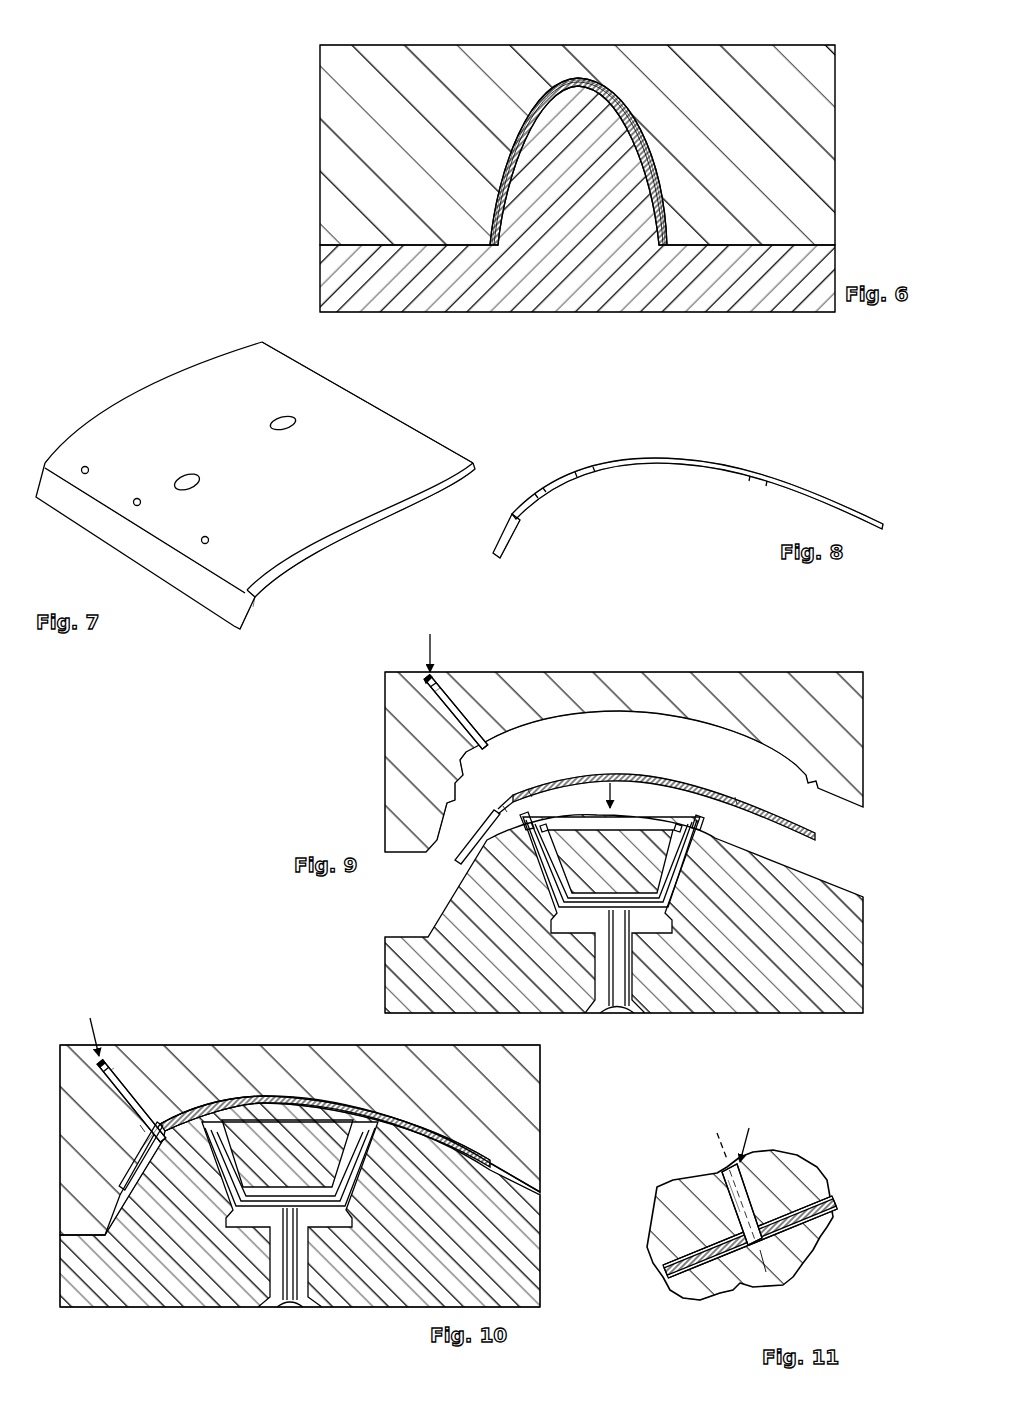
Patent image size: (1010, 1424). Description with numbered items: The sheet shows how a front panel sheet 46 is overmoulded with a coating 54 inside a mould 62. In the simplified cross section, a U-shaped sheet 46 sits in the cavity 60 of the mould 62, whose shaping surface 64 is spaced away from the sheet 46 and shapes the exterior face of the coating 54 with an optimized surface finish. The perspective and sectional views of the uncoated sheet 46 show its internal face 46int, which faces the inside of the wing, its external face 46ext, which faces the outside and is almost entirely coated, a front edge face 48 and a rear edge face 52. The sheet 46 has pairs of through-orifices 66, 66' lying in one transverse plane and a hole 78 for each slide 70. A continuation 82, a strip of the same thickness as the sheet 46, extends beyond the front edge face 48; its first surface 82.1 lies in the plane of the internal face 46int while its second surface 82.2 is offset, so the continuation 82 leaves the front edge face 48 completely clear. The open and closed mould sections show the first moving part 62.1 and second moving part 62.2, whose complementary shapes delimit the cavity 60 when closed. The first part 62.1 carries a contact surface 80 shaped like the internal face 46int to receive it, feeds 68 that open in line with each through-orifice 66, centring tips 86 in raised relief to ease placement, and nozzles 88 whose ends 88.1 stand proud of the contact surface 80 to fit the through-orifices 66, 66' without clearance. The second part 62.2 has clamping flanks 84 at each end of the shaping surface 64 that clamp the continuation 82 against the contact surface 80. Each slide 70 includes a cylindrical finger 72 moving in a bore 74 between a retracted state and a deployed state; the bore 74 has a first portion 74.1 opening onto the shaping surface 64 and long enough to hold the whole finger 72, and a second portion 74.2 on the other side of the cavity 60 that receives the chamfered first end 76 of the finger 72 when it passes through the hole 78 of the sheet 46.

In FIG. 6, the sheet 46 is at (647, 225).
In FIG. 7, the sheet 46 is at (117, 412).
In FIG. 8, the sheet 46 is at (733, 452).
In FIG. 9, the sheet 46 is at (627, 772).
In FIG. 10, the sheet 46 is at (305, 1098).
In FIG. 11, the sheet 46 is at (839, 1206).
In FIG. 7, the external face 46ext is at (355, 417).
In FIG. 8, the external face 46ext is at (668, 460).
In FIG. 9, the external face 46ext is at (800, 814).
In FIG. 10, the external face 46ext is at (453, 1128).
In FIG. 7, the internal face 46int is at (362, 510).
In FIG. 8, the internal face 46int is at (675, 476).
In FIG. 9, the internal face 46int is at (810, 843).
In FIG. 10, the internal face 46int is at (497, 1172).
In FIG. 7, the front edge face 48 is at (227, 590).
In FIG. 8, the front edge face 48 is at (508, 518).
In FIG. 7, the rear edge face 52 is at (440, 442).
In FIG. 8, the rear edge face 52 is at (883, 530).
In FIG. 11, the coating 54 is at (836, 1192).
In FIG. 6, the cavity 60 is at (630, 117).
In FIG. 10, the cavity 60 is at (360, 1100).
In FIG. 6, the mould 62 is at (840, 84).
In FIG. 9, the mould 62 is at (838, 686).
In FIG. 10, the mould 62 is at (232, 1044).
In FIG. 9, the first moving part 62.1 is at (782, 1010).
In FIG. 10, the first moving part 62.1 is at (205, 1290).
In FIG. 11, the first moving part 62.1 is at (810, 1237).
In FIG. 9, the second moving part 62.2 is at (647, 690).
In FIG. 10, the second moving part 62.2 is at (170, 1062).
In FIG. 11, the second moving part 62.2 is at (667, 1213).
In FIG. 6, the shaping surface 64 is at (578, 96).
In FIG. 9, the shaping surface 64 is at (543, 715).
In FIG. 10, the shaping surface 64 is at (263, 1095).
In FIG. 7, the through-orifice 66 is at (180, 414).
In FIG. 8, the through-orifice 66 is at (589, 442).
In FIG. 9, the through-orifice 66 is at (539, 765).
In FIG. 7, the through-orifice 66' is at (297, 381).
In FIG. 8, the through-orifice 66' is at (782, 461).
In FIG. 9, the through-orifice 66' is at (718, 773).
In FIG. 9, the feed 68 is at (657, 890).
In FIG. 10, the feed 68 is at (320, 1180).
In FIG. 9, the slide 70 is at (431, 641).
In FIG. 10, the slide 70 is at (88, 1025).
In FIG. 11, the slide 70 is at (754, 1126).
In FIG. 9, the finger 72 is at (448, 698).
In FIG. 10, the finger 72 is at (110, 1060).
In FIG. 11, the finger 72 is at (760, 1162).
In FIG. 9, the bore 74 is at (466, 746).
In FIG. 10, the bore 74 is at (98, 1063).
In FIG. 9, the first portion 74.1 is at (437, 690).
In FIG. 10, the first portion 74.1 is at (160, 1075).
In FIG. 11, the first portion 74.1 is at (782, 1177).
In FIG. 9, the second portion 74.2 is at (470, 852).
In FIG. 10, the second portion 74.2 is at (168, 1145).
In FIG. 11, the second portion 74.2 is at (747, 1253).
In FIG. 11, the first end 76 is at (800, 1280).
In FIG. 7, the hole 78 is at (205, 540).
In FIG. 8, the hole 78 is at (543, 496).
In FIG. 9, the hole 78 is at (480, 798).
In FIG. 10, the hole 78 is at (135, 1125).
In FIG. 9, the contact surface 80 is at (608, 782).
In FIG. 10, the contact surface 80 is at (513, 1210).
In FIG. 7, the continuation 82 is at (140, 560).
In FIG. 8, the continuation 82 is at (508, 556).
In FIG. 9, the continuation 82 is at (447, 857).
In FIG. 10, the continuation 82 is at (130, 1192).
In FIG. 7, the first surface 82.1 is at (236, 626).
In FIG. 8, the first surface 82.1 is at (497, 554).
In FIG. 7, the second surface 82.2 is at (253, 607).
In FIG. 8, the second surface 82.2 is at (516, 532).
In FIG. 9, the clamping flank 84 is at (452, 800).
In FIG. 10, the clamping flank 84 is at (140, 1170).
In FIG. 9, the centring tip 86 is at (545, 806).
In FIG. 9, the nozzle 88 is at (537, 863).
In FIG. 10, the nozzle 88 is at (290, 1217).
In FIG. 9, the end 88.1 is at (525, 810).